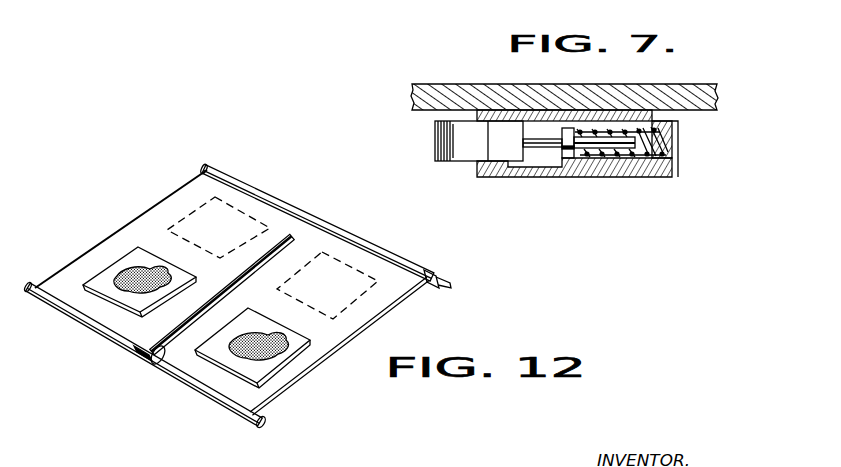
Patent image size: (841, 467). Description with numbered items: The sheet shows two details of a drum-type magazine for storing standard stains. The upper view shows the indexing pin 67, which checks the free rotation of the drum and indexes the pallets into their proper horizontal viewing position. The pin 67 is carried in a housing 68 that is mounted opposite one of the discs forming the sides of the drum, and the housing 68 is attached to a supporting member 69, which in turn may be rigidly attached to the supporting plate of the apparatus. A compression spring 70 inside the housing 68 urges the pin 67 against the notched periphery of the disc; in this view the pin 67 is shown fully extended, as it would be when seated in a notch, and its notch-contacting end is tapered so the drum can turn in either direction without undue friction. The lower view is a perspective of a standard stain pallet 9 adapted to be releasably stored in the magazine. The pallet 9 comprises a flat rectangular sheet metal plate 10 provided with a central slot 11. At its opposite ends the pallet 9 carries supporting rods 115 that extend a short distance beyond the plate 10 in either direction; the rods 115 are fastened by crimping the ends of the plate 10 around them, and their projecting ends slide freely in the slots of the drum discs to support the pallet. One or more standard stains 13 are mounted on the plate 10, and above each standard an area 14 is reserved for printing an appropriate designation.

In FIG. 12, the pallet 9 is at (105, 242).
In FIG. 12, the plate 10 is at (324, 340).
In FIG. 12, the central slot 11 is at (151, 364).
In FIG. 12, the standard stain 13 is at (128, 306).
In FIG. 12, the designation area 14 is at (266, 203).
In FIG. 12, the supporting rod 115 is at (450, 279).
In FIG. 7, the indexing pin 67 is at (457, 163).
In FIG. 7, the housing 68 is at (615, 170).
In FIG. 7, the supporting member 69 is at (455, 92).
In FIG. 7, the compression spring 70 is at (653, 165).